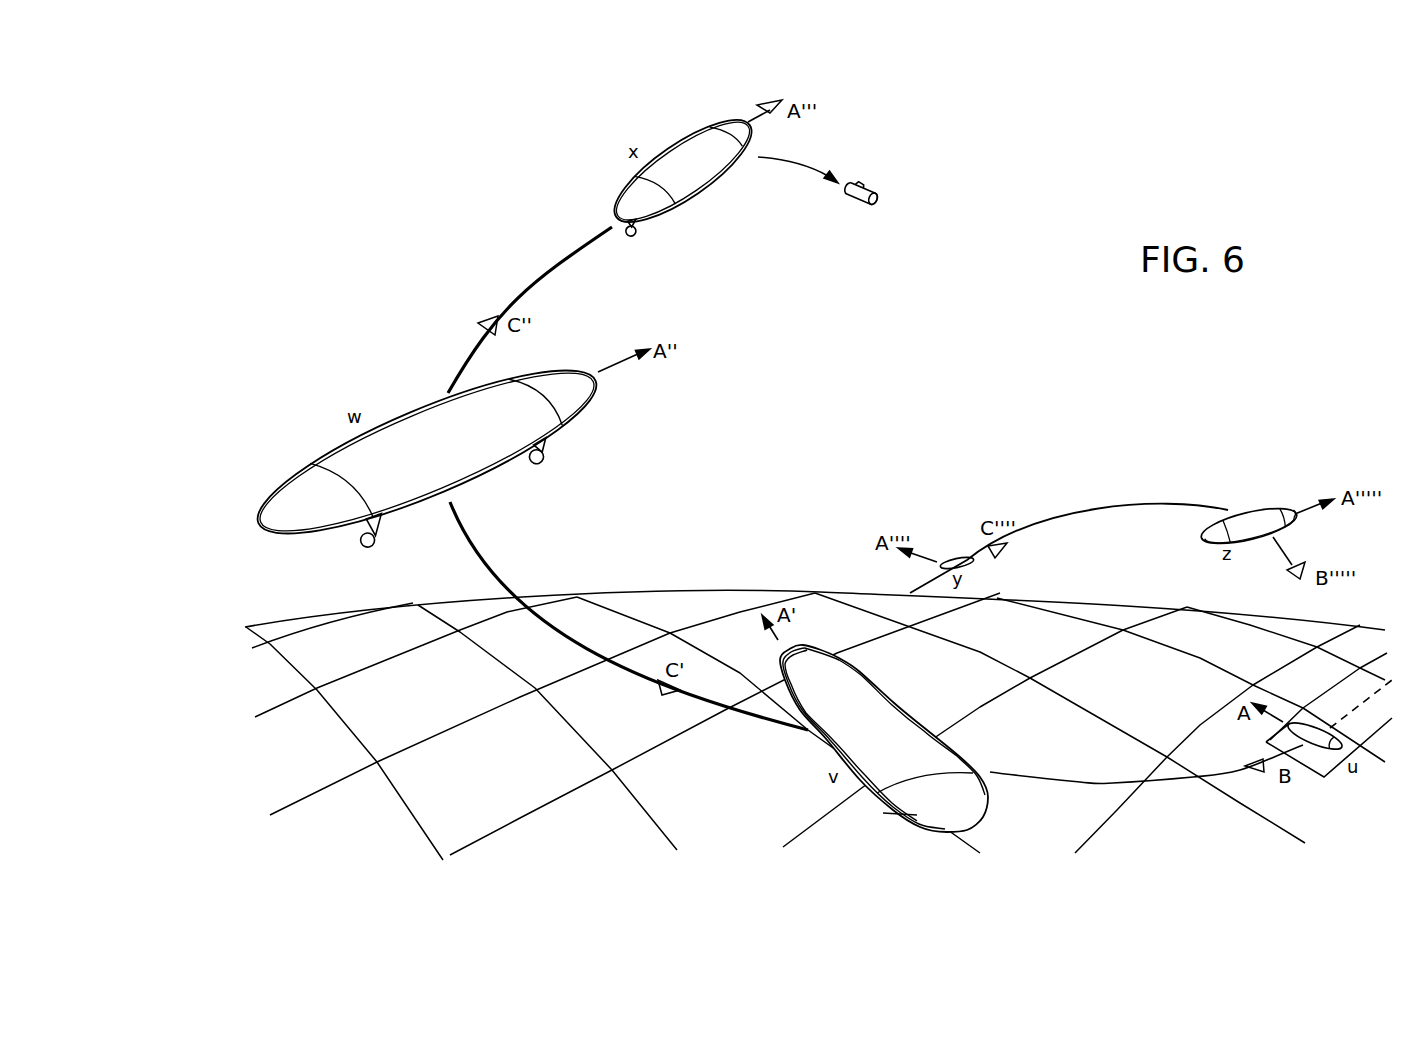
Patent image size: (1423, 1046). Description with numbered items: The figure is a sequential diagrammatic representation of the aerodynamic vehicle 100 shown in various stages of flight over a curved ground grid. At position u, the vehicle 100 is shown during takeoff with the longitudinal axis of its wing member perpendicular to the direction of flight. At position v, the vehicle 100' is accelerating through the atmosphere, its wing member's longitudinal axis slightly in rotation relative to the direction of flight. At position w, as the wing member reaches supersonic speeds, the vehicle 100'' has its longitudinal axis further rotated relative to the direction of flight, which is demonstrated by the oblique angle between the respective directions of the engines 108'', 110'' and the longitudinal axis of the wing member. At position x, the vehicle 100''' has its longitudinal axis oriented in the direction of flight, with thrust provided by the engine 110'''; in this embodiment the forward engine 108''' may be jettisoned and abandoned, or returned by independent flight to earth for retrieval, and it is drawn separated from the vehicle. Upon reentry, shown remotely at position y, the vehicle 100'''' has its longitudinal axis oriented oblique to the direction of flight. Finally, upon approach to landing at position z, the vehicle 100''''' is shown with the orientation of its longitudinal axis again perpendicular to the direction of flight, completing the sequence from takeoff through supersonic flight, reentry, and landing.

The aerodynamic vehicle 100 is at (1315, 711).
The aerodynamic vehicle 100' is at (884, 738).
The aerodynamic vehicle 100'' is at (427, 452).
The aerodynamic vehicle 100''' is at (692, 171).
The aerodynamic vehicle 100'''' is at (1000, 571).
The aerodynamic vehicle 100''''' is at (1249, 506).
The engine 108'' is at (570, 456).
The forward engine 108''' is at (894, 179).
The engine 110'' is at (392, 545).
The engine 110''' is at (660, 243).